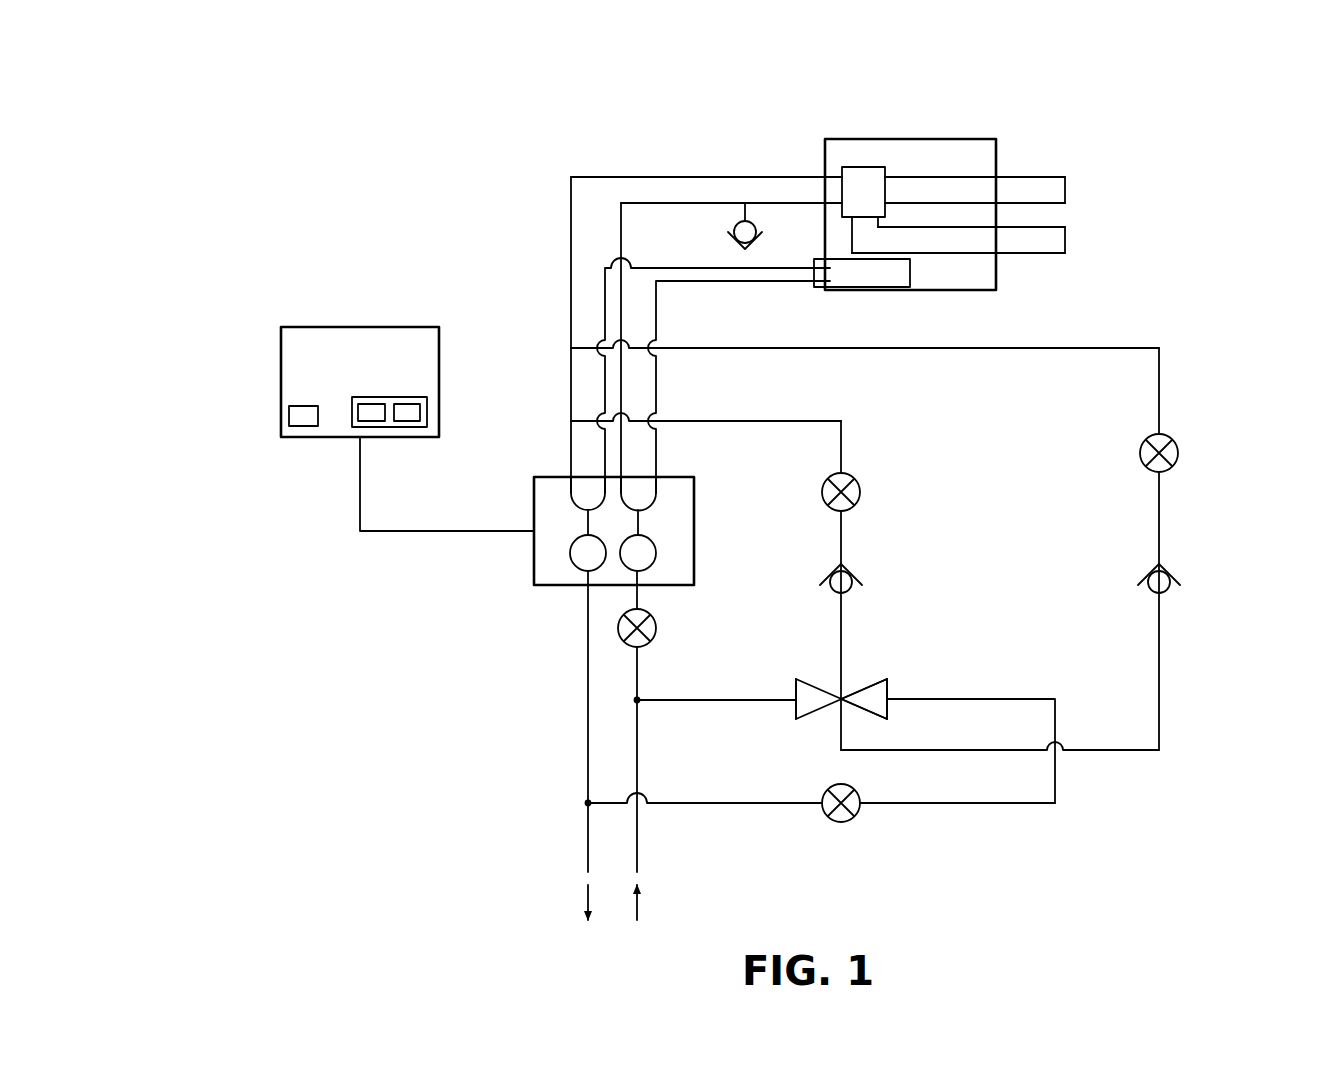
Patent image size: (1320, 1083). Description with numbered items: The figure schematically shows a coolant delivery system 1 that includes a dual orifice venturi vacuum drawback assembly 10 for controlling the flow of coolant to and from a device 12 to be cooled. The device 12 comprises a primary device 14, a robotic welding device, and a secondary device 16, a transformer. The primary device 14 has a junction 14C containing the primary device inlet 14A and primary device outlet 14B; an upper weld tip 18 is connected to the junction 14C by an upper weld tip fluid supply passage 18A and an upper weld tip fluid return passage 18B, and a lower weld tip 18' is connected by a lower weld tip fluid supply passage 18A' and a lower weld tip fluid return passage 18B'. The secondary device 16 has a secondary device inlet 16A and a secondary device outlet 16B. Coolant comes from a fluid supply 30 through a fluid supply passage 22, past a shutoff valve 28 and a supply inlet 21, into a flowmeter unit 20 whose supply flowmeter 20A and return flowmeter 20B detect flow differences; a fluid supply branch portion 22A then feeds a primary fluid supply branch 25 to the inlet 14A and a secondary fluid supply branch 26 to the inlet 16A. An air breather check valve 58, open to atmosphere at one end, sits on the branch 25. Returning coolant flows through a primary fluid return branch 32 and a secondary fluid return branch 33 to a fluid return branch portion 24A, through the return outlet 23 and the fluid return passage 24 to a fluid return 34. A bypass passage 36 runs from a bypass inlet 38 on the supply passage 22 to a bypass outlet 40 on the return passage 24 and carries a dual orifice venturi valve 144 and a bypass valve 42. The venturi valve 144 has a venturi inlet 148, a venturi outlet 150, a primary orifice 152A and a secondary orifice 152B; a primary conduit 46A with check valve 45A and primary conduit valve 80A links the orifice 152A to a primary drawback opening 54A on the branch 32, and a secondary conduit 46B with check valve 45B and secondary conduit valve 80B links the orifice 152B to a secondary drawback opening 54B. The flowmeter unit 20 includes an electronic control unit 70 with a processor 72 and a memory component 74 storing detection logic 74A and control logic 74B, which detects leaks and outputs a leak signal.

The coolant delivery system 1 is at (318, 128).
The dual orifice venturi vacuum drawback assembly 10 is at (310, 750).
The device 12 is at (825, 139).
The primary device 14 is at (918, 139).
The primary device inlet 14A is at (822, 177).
The primary device outlet 14B is at (822, 203).
The junction 14C is at (855, 167).
The secondary device 16 is at (852, 290).
The secondary device inlet 16A is at (817, 287).
The secondary device outlet 16B is at (814, 262).
The upper weld tip 18 is at (987, 192).
The upper weld tip fluid supply passage 18A is at (975, 132).
The upper weld tip fluid return passage 18B is at (989, 154).
The lower weld tip 18' is at (980, 260).
The lower weld tip fluid supply passage 18A' is at (984, 279).
The lower weld tip fluid return passage 18B' is at (958, 296).
The flowmeter unit 20 is at (694, 513).
The supply flowmeter 20A is at (656, 553).
The return flowmeter 20B is at (571, 553).
The supply inlet 21 is at (637, 588).
The fluid supply passage 22 is at (640, 858).
The fluid supply branch portion 22A is at (656, 498).
The return outlet 23 is at (580, 585).
The fluid return passage 24 is at (585, 858).
The fluid return branch portion 24A is at (571, 498).
The primary fluid supply branch 25 is at (623, 300).
The secondary fluid supply branch 26 is at (658, 326).
The shutoff valve 28 is at (655, 632).
The fluid supply 30 is at (637, 916).
The primary fluid return branch 32 is at (571, 213).
The secondary fluid return branch 33 is at (621, 243).
The fluid return 34 is at (588, 916).
The bypass passage 36 is at (1040, 690).
The bypass inlet 38 is at (640, 700).
The bypass outlet 40 is at (588, 803).
The bypass valve 42 is at (855, 790).
The check valve 45A is at (848, 568).
The check valve 45B is at (1168, 570).
The primary conduit 46A is at (841, 460).
The secondary conduit 46B is at (1050, 348).
The primary drawback opening 54A is at (571, 421).
The secondary drawback opening 54B is at (571, 348).
The air breather check valve 58 is at (735, 225).
The electronic control unit 70 is at (281, 340).
The processor 72 is at (289, 413).
The memory component 74 is at (405, 397).
The detection logic 74A is at (358, 412).
The control logic 74B is at (420, 412).
The primary conduit valve 80A is at (862, 493).
The secondary conduit valve 80B is at (1140, 455).
The dual orifice venturi valve 144 is at (893, 675).
The venturi inlet 148 is at (797, 702).
The venturi outlet 150 is at (890, 700).
The primary orifice 152A is at (841, 699).
The secondary orifice 152B is at (841, 699).